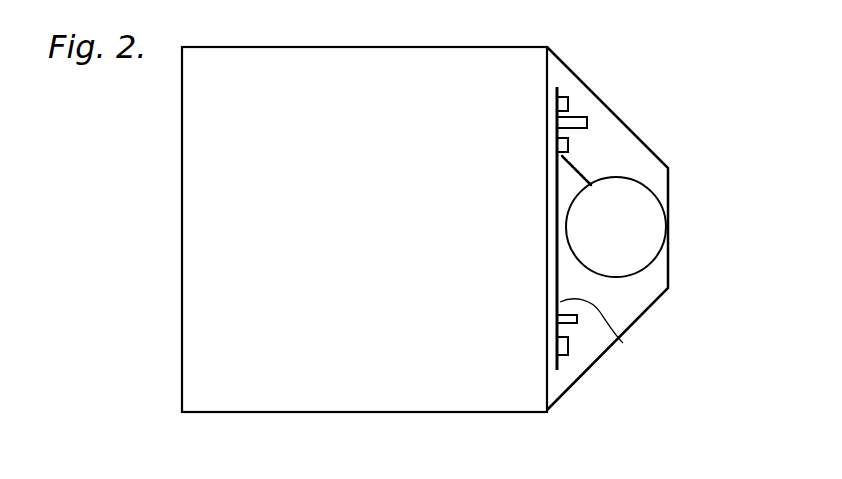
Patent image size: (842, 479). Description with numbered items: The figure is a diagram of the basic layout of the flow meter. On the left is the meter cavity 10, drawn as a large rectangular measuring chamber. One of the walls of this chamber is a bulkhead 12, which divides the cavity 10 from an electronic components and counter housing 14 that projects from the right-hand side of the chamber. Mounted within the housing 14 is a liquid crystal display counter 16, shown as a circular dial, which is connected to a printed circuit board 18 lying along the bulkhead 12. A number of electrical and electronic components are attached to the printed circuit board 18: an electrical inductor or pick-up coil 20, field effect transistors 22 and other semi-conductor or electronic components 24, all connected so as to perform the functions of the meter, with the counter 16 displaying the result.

The meter cavity 10 is at (263, 395).
The bulkhead 12 is at (546, 210).
The electronic components and counter housing 14 is at (650, 303).
The liquid crystal display counter 16 is at (646, 270).
The printed circuit board 18 is at (607, 330).
The pick-up coil 20 is at (568, 104).
The field effect transistors 22 is at (568, 145).
The electronic components 24 is at (587, 122).